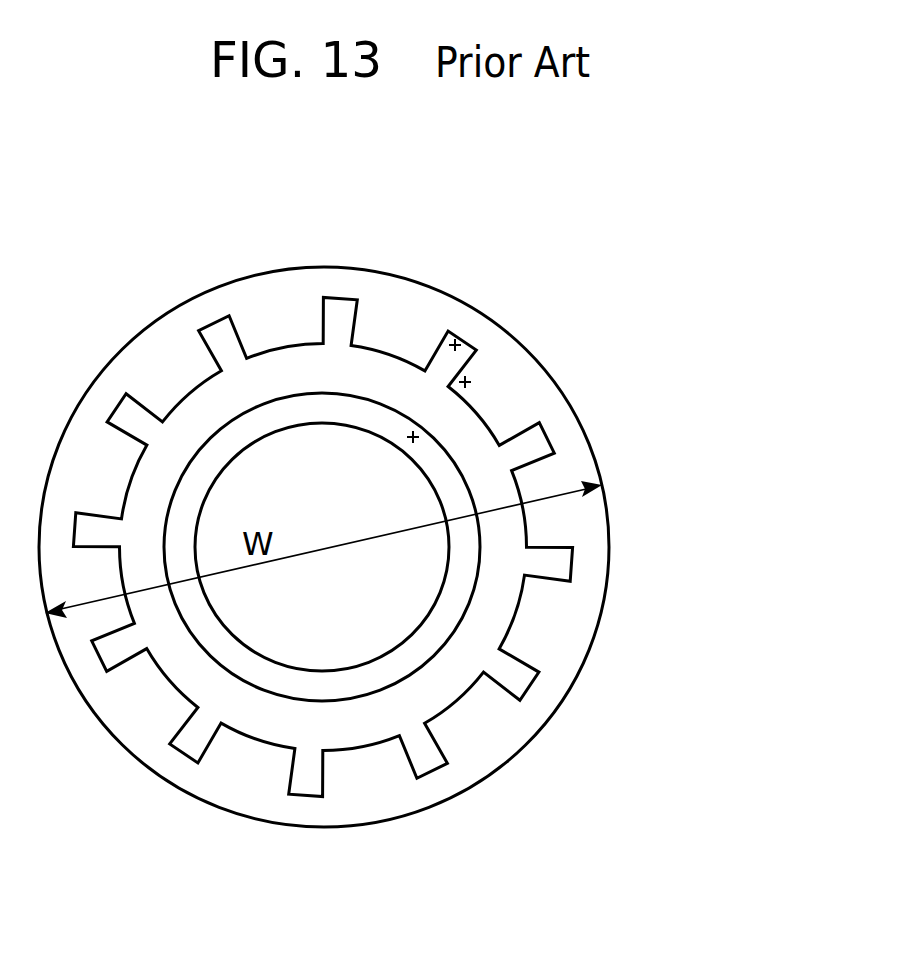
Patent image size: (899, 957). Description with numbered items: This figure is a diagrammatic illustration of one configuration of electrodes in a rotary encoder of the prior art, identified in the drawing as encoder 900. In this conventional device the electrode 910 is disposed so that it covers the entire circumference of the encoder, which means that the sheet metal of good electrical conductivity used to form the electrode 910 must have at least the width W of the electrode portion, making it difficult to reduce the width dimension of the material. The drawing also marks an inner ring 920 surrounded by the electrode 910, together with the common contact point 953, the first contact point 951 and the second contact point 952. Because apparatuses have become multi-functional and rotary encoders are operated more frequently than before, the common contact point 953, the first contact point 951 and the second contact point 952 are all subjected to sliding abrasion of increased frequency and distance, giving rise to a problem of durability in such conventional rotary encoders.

The stator core (prior art) 900 is at (415, 509).
The electrode 910 is at (540, 387).
The inner ring 920 is at (292, 412).
The first contact point 951 is at (470, 379).
The second contact point 952 is at (457, 341).
The common contact point 953 is at (409, 433).